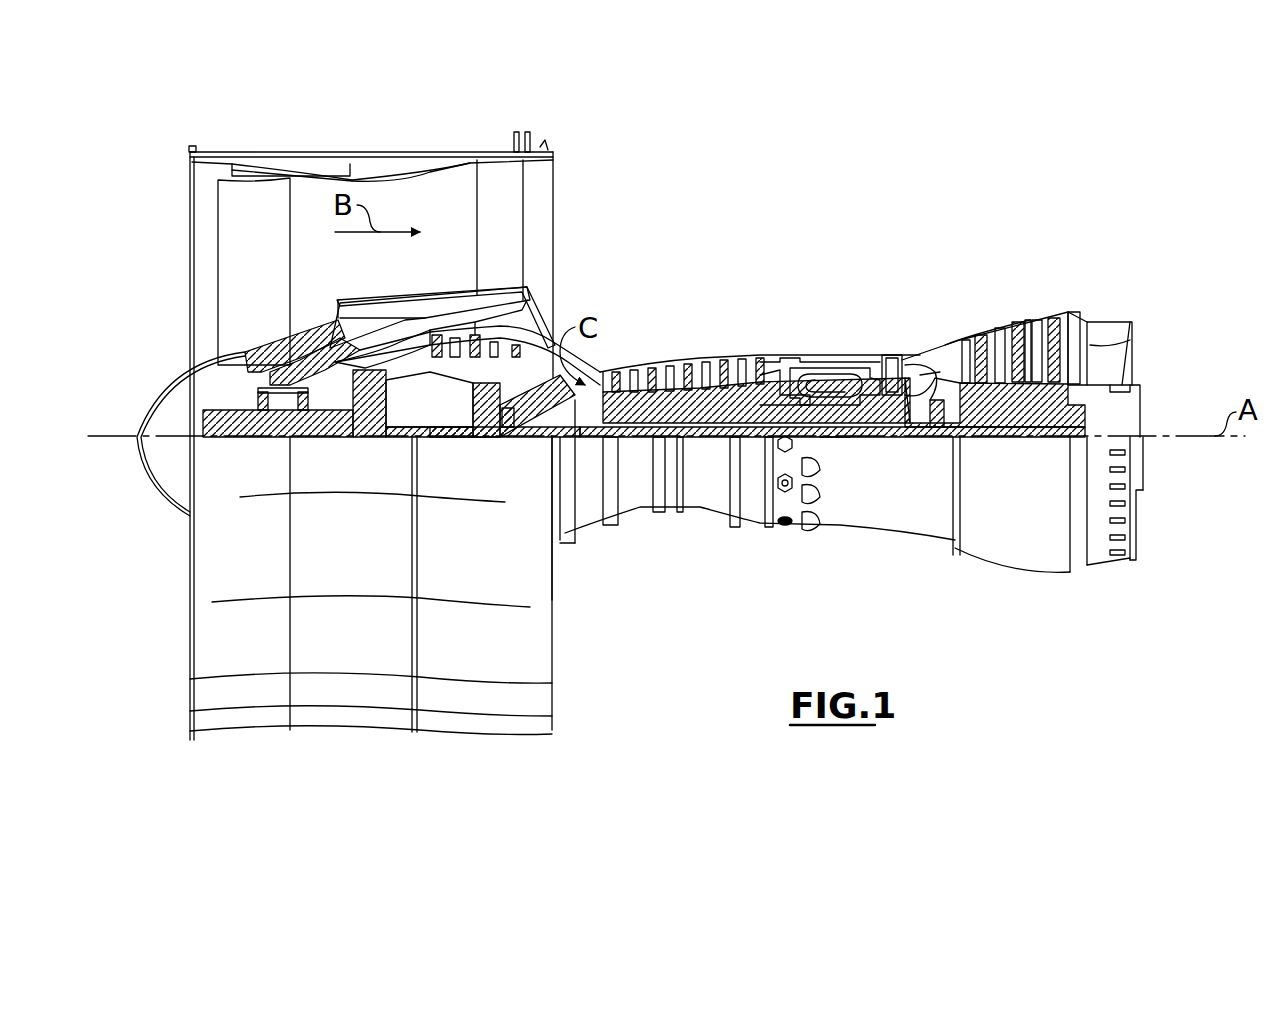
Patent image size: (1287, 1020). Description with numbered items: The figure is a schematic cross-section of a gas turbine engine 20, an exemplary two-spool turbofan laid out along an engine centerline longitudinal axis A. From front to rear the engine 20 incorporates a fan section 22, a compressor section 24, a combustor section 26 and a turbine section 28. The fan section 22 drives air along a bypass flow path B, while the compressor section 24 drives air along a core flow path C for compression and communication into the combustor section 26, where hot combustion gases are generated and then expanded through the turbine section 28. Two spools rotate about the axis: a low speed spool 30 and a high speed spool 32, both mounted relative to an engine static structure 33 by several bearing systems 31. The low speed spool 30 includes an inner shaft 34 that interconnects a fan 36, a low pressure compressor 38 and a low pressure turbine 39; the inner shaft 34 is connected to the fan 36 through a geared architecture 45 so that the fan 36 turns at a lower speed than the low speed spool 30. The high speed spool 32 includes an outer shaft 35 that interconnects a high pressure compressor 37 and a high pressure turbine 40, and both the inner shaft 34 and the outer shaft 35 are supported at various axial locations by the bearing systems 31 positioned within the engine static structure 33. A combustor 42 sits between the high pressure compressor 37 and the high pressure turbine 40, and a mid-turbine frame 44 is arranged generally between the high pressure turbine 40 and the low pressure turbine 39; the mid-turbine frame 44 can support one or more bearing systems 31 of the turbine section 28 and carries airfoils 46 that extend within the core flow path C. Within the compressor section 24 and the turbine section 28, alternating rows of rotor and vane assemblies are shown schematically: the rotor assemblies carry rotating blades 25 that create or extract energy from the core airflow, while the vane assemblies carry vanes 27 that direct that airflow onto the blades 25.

The gas turbine engine 20 is at (834, 200).
The fan section 22 is at (300, 145).
The compressor section 24 is at (604, 343).
The blades 25 is at (436, 348).
The combustor section 26 is at (826, 330).
The vanes 27 is at (458, 345).
The turbine section 28 is at (973, 298).
The low speed spool 30 is at (710, 445).
The bearing systems 31 is at (290, 440).
The high speed spool 32 is at (753, 395).
The engine static structure 33 is at (750, 530).
The inner shaft 34 is at (573, 440).
The outer shaft 35 is at (835, 437).
The fan 36 is at (275, 283).
The high pressure compressor 37 is at (676, 408).
The low pressure compressor 38 is at (535, 295).
The low pressure turbine 39 is at (1040, 318).
The high pressure turbine 40 is at (890, 360).
The combustor 42 is at (834, 376).
The mid-turbine frame 44 is at (938, 350).
The geared architecture 45 is at (378, 440).
The airfoils 46 is at (935, 378).